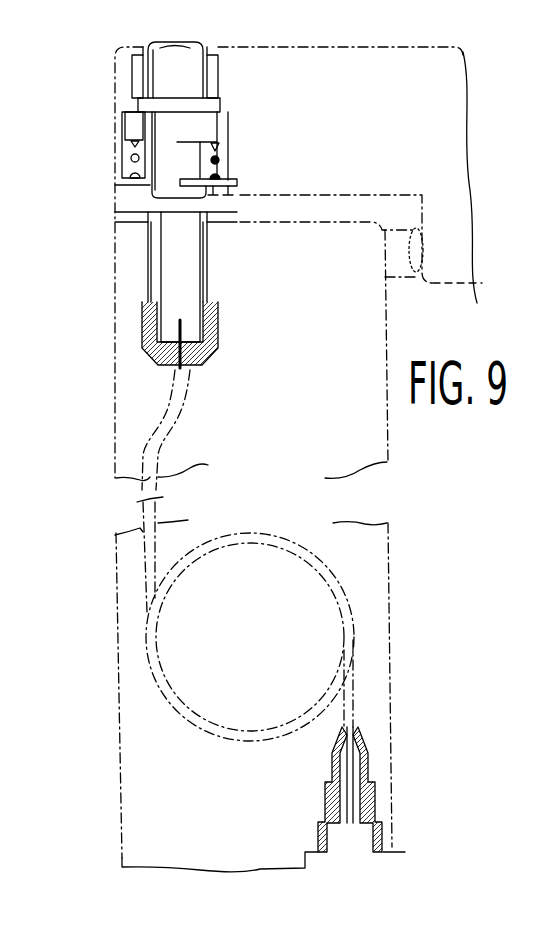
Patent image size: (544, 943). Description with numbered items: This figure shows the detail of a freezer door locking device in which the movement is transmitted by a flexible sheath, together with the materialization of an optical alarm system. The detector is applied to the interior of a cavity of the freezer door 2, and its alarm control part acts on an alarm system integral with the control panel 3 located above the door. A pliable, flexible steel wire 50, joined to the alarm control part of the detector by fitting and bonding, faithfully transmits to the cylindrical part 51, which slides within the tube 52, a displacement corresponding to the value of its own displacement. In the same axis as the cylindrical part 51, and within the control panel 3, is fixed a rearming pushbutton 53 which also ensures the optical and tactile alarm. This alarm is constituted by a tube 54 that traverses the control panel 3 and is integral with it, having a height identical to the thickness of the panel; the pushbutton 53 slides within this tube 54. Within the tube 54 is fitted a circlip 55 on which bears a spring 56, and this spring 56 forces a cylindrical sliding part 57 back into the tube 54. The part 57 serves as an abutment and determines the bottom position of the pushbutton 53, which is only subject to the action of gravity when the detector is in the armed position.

The freezer door 2 is at (115, 408).
The control panel 3 is at (113, 113).
The pliable flexible steel wire 50 is at (350, 798).
The cylindrical part 51 is at (182, 268).
The tube 52 is at (147, 253).
The rearming pushbutton 53 is at (192, 85).
The tube 54 is at (228, 163).
The circlip 55 is at (237, 183).
The spring 56 is at (133, 158).
The cylindrical sliding part 57 is at (202, 127).